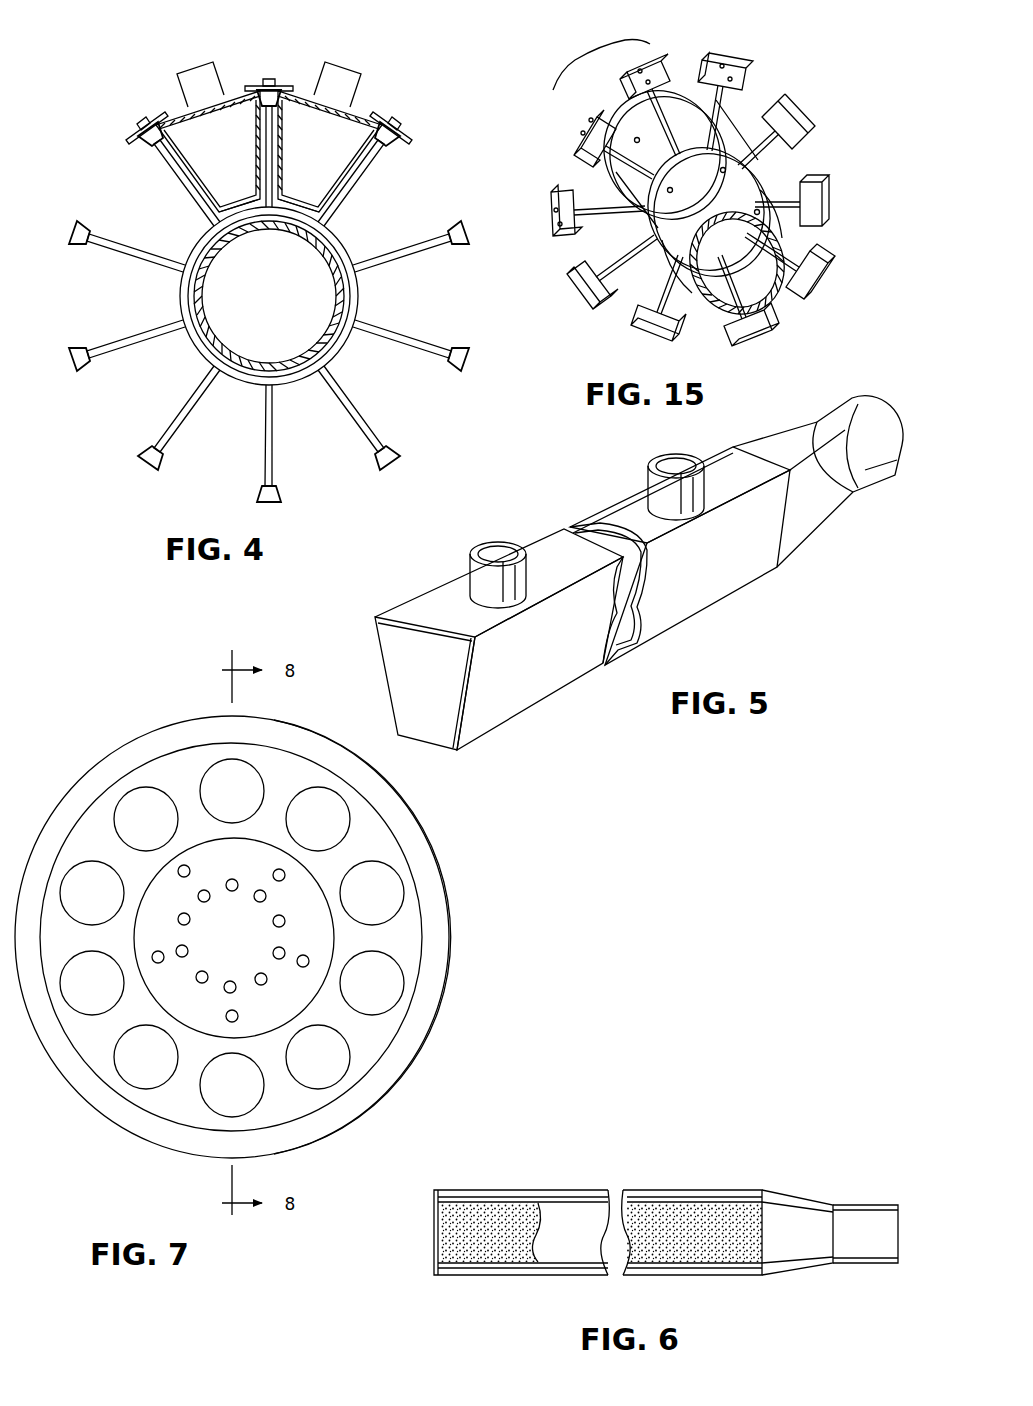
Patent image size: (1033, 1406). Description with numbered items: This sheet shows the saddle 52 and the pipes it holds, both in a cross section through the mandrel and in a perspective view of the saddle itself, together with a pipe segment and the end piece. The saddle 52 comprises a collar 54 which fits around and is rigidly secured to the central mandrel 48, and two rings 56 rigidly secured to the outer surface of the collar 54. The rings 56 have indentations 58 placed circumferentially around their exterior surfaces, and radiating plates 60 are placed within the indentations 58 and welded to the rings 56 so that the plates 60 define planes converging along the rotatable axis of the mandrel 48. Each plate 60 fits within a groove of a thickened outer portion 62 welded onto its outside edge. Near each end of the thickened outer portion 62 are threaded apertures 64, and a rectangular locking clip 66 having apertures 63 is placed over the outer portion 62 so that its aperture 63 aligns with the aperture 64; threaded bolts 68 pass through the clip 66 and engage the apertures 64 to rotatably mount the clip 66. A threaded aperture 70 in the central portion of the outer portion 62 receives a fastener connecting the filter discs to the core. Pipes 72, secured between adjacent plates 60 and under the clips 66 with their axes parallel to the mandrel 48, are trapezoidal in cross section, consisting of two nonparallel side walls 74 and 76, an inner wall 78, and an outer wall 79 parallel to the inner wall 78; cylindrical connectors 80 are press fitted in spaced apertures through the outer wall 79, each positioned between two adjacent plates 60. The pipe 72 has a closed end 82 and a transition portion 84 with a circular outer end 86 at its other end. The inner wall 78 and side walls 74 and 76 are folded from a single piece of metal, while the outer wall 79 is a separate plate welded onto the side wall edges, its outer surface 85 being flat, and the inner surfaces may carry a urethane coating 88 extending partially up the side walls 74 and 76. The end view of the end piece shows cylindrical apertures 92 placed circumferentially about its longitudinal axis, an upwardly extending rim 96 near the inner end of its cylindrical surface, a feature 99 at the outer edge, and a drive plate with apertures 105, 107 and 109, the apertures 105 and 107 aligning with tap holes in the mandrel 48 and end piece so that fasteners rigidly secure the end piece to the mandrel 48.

In FIG. 4, the central mandrel 48 is at (233, 375).
In FIG. 15, the central mandrel 48 is at (778, 298).
In FIG. 15, the saddle 52 is at (812, 122).
In FIG. 4, the collar 54 is at (245, 383).
In FIG. 15, the collar 54 is at (690, 175).
In FIG. 4, the rings 56 is at (337, 247).
In FIG. 15, the rings 56 is at (685, 125).
In FIG. 4, the indentations 58 is at (323, 228).
In FIG. 15, the indentations 58 is at (662, 242).
In FIG. 4, the plates 60 is at (360, 173).
In FIG. 15, the plates 60 is at (617, 150).
In FIG. 4, the thickened outer portion 62 is at (393, 143).
In FIG. 15, the thickened outer portion 62 is at (640, 65).
In FIG. 4, the apertures 63 is at (285, 82).
In FIG. 15, the threaded apertures 64 is at (575, 120).
In FIG. 4, the rectangular locking clip 66 is at (393, 132).
In FIG. 4, the threaded bolts 68 is at (266, 80).
In FIG. 15, the threaded aperture 70 is at (655, 78).
In FIG. 4, the pipes 72 is at (173, 108).
In FIG. 4, the side wall 74 is at (193, 155).
In FIG. 6, the side wall 74 is at (527, 1190).
In FIG. 4, the side wall 76 is at (253, 145).
In FIG. 6, the side wall 76 is at (500, 1276).
In FIG. 4, the inner wall 78 is at (233, 202).
In FIG. 6, the inner wall 78 is at (560, 1228).
In FIG. 4, the outer wall 79 is at (222, 100).
In FIG. 5, the outer wall 79 is at (583, 512).
In FIG. 4, the cylindrical connectors 80 is at (217, 83).
In FIG. 5, the closed end 82 is at (456, 749).
In FIG. 6, the closed end 82 is at (430, 1225).
In FIG. 5, the transition portion 84 is at (820, 520).
In FIG. 6, the transition portion 84 is at (812, 1198).
In FIG. 5, the outer surface 85 is at (608, 500).
In FIG. 5, the circular outer end 86 is at (868, 395).
In FIG. 6, the circular outer end 86 is at (898, 1243).
In FIG. 6, the urethane coating 88 is at (471, 1222).
In FIG. 7, the apertures 92 is at (340, 834).
In FIG. 7, the rim 96 is at (445, 908).
In FIG. 7, the disc face 99 is at (422, 945).
In FIG. 7, the apertures 105 is at (189, 867).
In FIG. 7, the apertures 107 is at (234, 879).
In FIG. 7, the apertures 109 is at (231, 981).